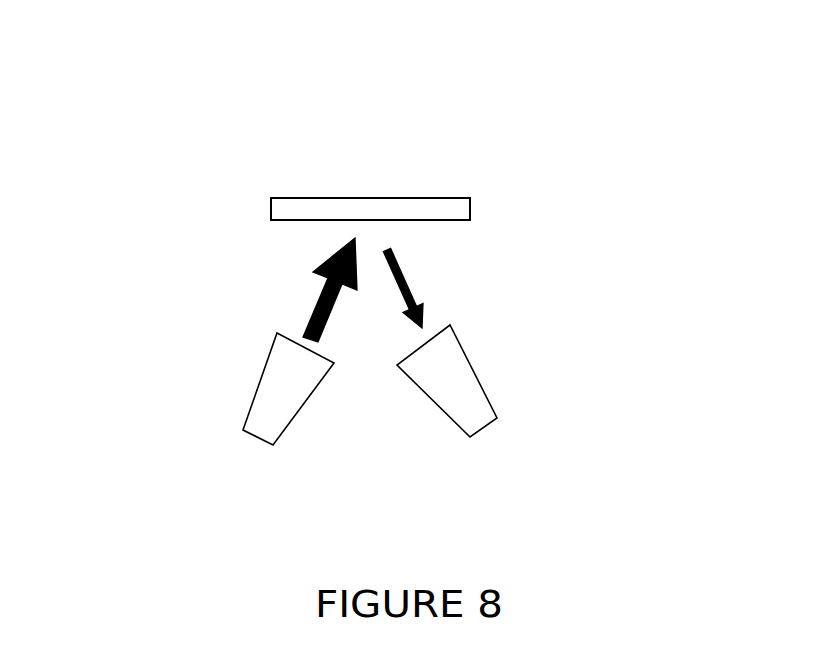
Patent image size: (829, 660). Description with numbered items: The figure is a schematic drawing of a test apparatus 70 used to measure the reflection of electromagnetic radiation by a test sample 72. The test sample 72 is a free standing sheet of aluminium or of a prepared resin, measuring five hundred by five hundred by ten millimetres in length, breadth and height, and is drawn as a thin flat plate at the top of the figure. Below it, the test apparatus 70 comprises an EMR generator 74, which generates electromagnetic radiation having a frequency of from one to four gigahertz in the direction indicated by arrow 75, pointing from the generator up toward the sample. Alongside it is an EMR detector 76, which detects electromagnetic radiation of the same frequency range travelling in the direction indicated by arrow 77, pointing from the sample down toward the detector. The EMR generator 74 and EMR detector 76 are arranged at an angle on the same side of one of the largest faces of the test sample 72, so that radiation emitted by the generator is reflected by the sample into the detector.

The test apparatus 70 is at (296, 143).
The test sample 72 is at (452, 195).
The EMR generator 74 is at (263, 443).
The arrow 75 is at (312, 313).
The EMR detector 76 is at (493, 422).
The arrow 77 is at (410, 295).